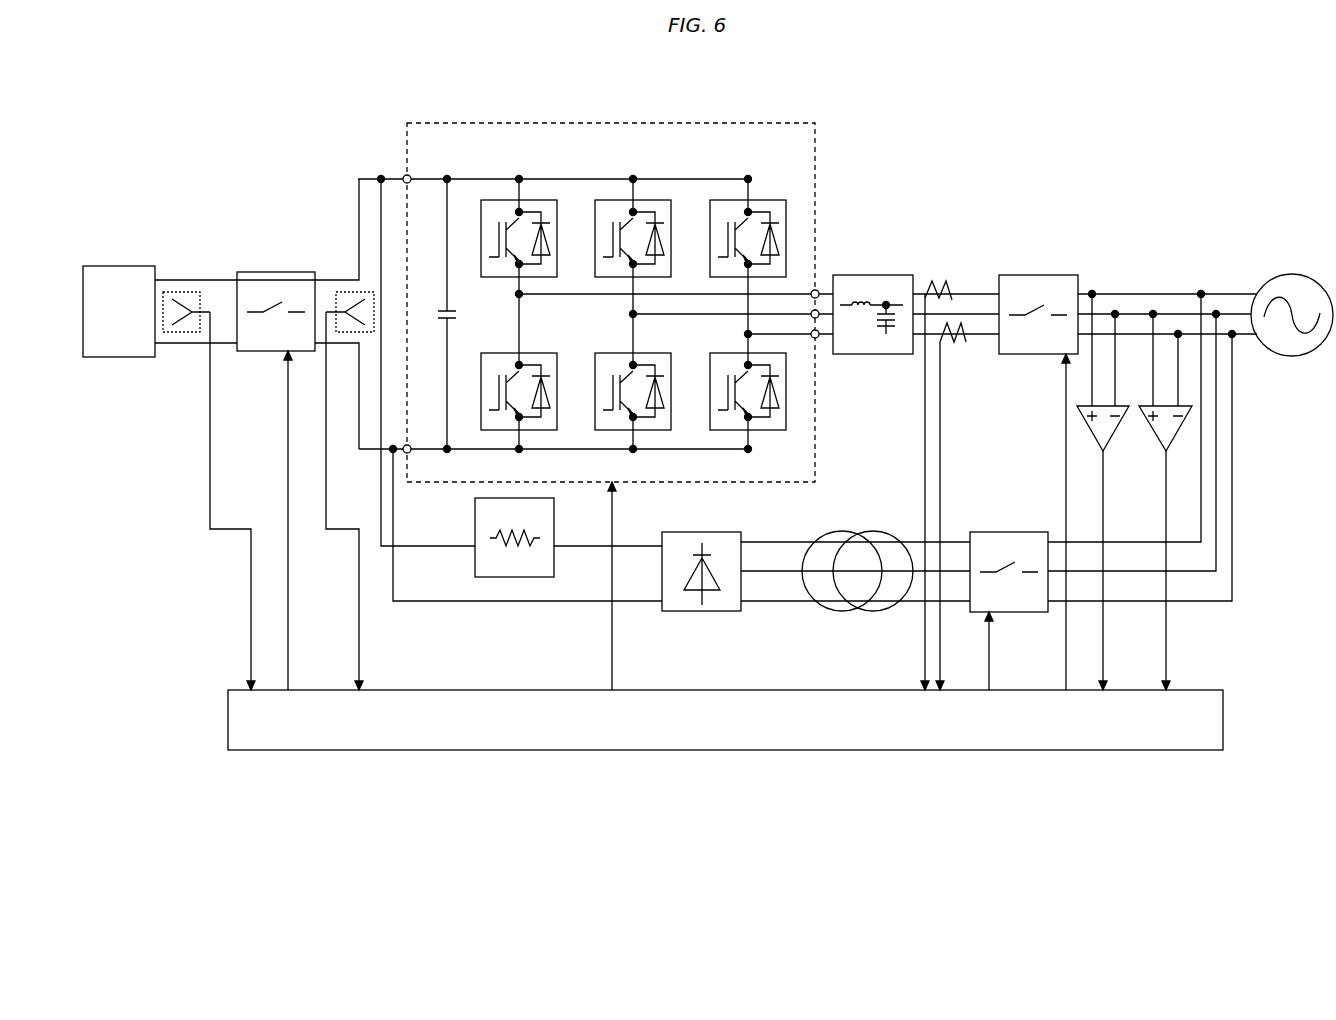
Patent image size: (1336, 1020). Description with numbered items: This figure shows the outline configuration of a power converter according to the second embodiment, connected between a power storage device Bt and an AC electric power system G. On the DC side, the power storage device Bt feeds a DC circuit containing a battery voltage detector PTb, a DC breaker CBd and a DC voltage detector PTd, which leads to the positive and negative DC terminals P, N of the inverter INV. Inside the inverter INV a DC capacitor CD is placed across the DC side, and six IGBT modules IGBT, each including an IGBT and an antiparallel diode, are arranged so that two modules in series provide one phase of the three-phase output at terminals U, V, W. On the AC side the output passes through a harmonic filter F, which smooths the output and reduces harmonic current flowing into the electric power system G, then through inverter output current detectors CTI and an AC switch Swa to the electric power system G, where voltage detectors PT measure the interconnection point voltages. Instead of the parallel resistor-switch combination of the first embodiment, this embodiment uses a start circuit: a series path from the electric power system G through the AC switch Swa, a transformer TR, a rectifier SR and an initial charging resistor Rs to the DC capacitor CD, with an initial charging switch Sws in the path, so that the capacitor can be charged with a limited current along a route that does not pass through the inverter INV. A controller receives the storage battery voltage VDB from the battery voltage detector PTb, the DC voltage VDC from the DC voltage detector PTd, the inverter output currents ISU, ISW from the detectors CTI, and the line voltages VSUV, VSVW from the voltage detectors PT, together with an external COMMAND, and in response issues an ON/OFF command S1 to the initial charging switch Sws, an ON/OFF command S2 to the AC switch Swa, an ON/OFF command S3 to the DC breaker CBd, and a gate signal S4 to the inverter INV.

The power storage device Bt is at (118, 265).
The battery voltage detector PTb is at (182, 291).
The DC breaker CBd is at (278, 271).
The DC voltage detector PTd is at (345, 291).
The inverter INV is at (688, 124).
The DC capacitor CD is at (452, 302).
The IGBT module IGBT is at (538, 199).
The positive DC bus P is at (555, 190).
The negative DC bus N is at (555, 440).
The U-phase output U is at (668, 283).
The V-phase output V is at (725, 304).
The W-phase output W is at (782, 325).
The harmonic filter F is at (875, 274).
The inverter output current detector CTI is at (950, 282).
The AC switch Swa is at (1040, 274).
The voltage detector PT is at (1125, 404).
The AC electric power system G is at (1288, 273).
The transformer TR is at (847, 531).
The initial charging switch Sws is at (1008, 531).
The initial charging resistor Rs is at (513, 578).
The rectifier SR is at (707, 612).
The ON/OFF command S1 is at (989, 652).
The ON/OFF command S2 is at (1066, 445).
The ON/OFF command S3 is at (288, 622).
The gate signal S4 is at (612, 652).
The storage battery voltage VDB is at (251, 604).
The DC voltage VDC is at (368, 501).
The command signal COMMAND is at (326, 669).
The inverter output current ISU is at (906, 492).
The inverter output current ISW is at (961, 516).
The line voltage VSUV is at (1130, 571).
The line voltage VSVW is at (1196, 571).